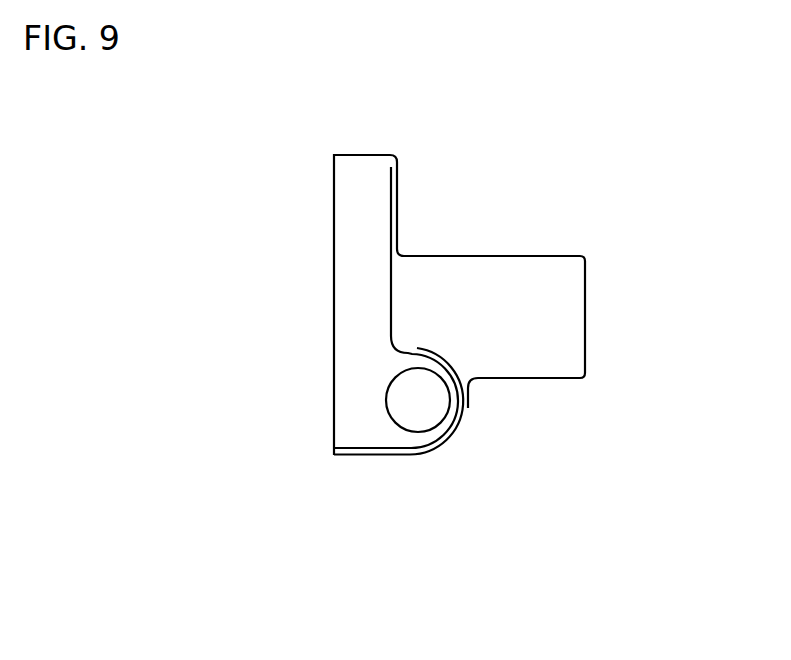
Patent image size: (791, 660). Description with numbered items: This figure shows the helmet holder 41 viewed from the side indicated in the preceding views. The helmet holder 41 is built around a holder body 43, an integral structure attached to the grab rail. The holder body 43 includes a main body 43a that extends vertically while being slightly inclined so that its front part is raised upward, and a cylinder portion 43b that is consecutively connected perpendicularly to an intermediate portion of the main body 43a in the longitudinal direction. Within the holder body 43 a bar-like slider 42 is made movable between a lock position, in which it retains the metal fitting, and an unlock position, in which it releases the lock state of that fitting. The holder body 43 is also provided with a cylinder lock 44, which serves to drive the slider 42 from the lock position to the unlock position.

The helmet holder 41 is at (420, 457).
The slider 42 is at (430, 403).
The holder body 43 is at (475, 256).
The main body 43a is at (356, 162).
The cylinder portion 43b is at (466, 265).
The cylinder lock 44 is at (590, 277).